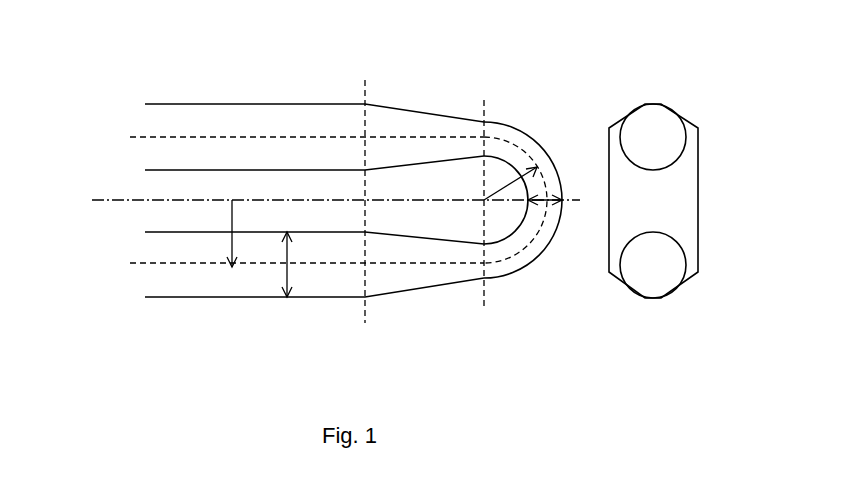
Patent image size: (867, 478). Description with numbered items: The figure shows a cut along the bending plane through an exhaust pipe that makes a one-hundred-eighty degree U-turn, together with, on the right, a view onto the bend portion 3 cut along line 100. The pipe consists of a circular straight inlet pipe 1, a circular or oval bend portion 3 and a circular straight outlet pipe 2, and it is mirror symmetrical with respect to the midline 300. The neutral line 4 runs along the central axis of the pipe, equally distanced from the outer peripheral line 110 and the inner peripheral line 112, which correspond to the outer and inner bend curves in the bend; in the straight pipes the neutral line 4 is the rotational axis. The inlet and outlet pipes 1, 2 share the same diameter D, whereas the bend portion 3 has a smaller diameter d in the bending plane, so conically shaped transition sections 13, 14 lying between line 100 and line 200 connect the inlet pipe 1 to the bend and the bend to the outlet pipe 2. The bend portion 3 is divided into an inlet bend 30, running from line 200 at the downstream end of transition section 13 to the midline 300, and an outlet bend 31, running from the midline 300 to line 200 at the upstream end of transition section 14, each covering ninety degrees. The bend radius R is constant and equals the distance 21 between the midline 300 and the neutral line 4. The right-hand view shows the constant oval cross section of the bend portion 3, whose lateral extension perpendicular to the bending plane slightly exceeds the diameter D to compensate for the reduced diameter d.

The inlet pipe 1 is at (195, 120).
The outlet pipe 2 is at (188, 295).
The bend portion 3 is at (550, 240).
The neutral line 4 is at (263, 137).
The transition section 13 is at (452, 128).
The transition section 14 is at (437, 280).
The distance 21 is at (235, 238).
The inlet bend 30 is at (553, 157).
The outlet bend 31 is at (530, 263).
The line 100 is at (367, 80).
The outer peripheral line 110 is at (320, 104).
The inner peripheral line 112 is at (328, 219).
The line 200 is at (517, 148).
The midline 300 is at (92, 200).
The bend radius R is at (538, 135).
The diameter D is at (288, 280).
The diameter d is at (560, 180).